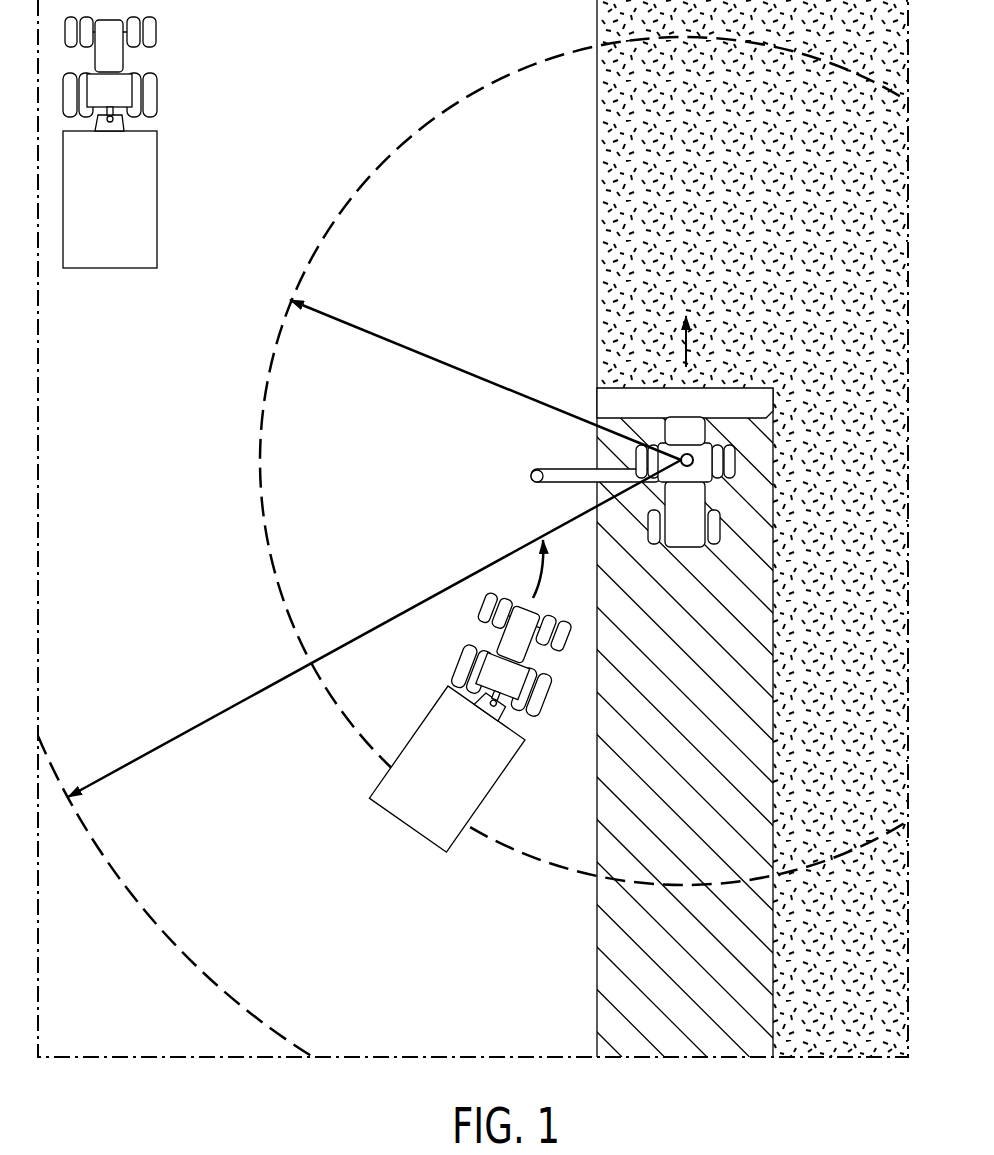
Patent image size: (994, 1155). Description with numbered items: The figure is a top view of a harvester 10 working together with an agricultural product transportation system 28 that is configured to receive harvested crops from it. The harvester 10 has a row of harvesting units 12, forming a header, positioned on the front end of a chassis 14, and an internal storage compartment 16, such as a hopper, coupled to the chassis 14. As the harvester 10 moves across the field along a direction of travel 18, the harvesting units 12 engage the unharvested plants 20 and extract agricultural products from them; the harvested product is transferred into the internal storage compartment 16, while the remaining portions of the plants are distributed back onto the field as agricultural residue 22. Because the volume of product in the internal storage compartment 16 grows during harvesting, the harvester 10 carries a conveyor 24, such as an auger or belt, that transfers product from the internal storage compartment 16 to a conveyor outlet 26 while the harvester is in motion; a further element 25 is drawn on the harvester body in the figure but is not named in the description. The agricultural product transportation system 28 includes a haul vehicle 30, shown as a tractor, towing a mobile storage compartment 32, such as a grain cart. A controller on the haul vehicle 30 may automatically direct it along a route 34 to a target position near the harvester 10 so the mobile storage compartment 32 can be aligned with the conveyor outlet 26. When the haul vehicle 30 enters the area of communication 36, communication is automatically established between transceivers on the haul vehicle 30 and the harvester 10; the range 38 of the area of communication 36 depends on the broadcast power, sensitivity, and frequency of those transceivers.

The harvester 10 is at (792, 372).
The harvesting units 12 is at (630, 398).
The chassis 14 is at (692, 517).
The internal storage compartment 16 is at (665, 482).
The direction of travel 18 is at (685, 348).
The unharvested plants 20 is at (628, 207).
The agricultural residue 22 is at (627, 780).
The conveyor 24 is at (569, 470).
The paver body 25 is at (682, 483).
The conveyor outlet 26 is at (528, 475).
The agricultural product transportation system 28 is at (318, 470).
The haul vehicle 30 is at (125, 63).
The mobile storage compartment 32 is at (158, 245).
The route 34 is at (538, 575).
The area of communication 36 is at (108, 865).
The range 38 is at (145, 755).